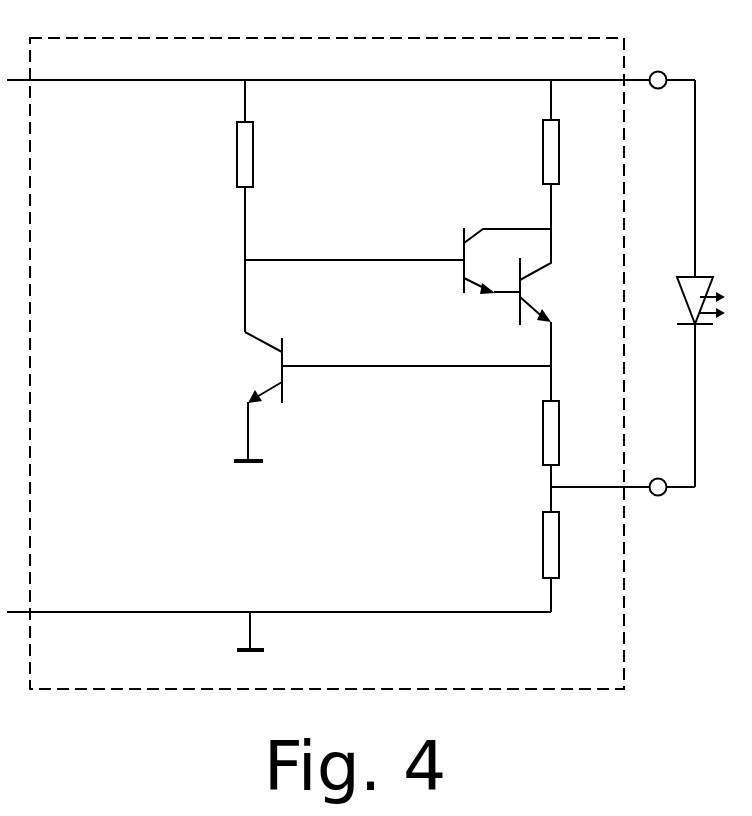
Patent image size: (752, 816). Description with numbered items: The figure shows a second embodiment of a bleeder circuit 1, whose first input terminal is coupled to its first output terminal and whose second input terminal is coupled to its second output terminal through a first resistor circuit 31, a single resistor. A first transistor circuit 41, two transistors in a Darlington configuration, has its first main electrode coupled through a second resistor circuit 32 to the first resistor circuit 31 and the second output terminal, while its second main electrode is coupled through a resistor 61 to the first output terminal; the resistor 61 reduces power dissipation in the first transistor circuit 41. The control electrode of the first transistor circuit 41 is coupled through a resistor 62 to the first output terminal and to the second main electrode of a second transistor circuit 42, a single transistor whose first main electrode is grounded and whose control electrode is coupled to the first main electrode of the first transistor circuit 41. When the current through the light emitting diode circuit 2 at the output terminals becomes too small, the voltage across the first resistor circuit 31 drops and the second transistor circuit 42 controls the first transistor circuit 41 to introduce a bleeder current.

The bleeder circuit 1 is at (602, 689).
The light emitting diode circuit 2 is at (701, 317).
The first resistor circuit 31 is at (571, 545).
The second resistor circuit 32 is at (571, 433).
The first transistor circuit 41 is at (508, 268).
The second transistor circuit 42 is at (253, 396).
The resistor 61 is at (571, 152).
The resistor 62 is at (225, 154).